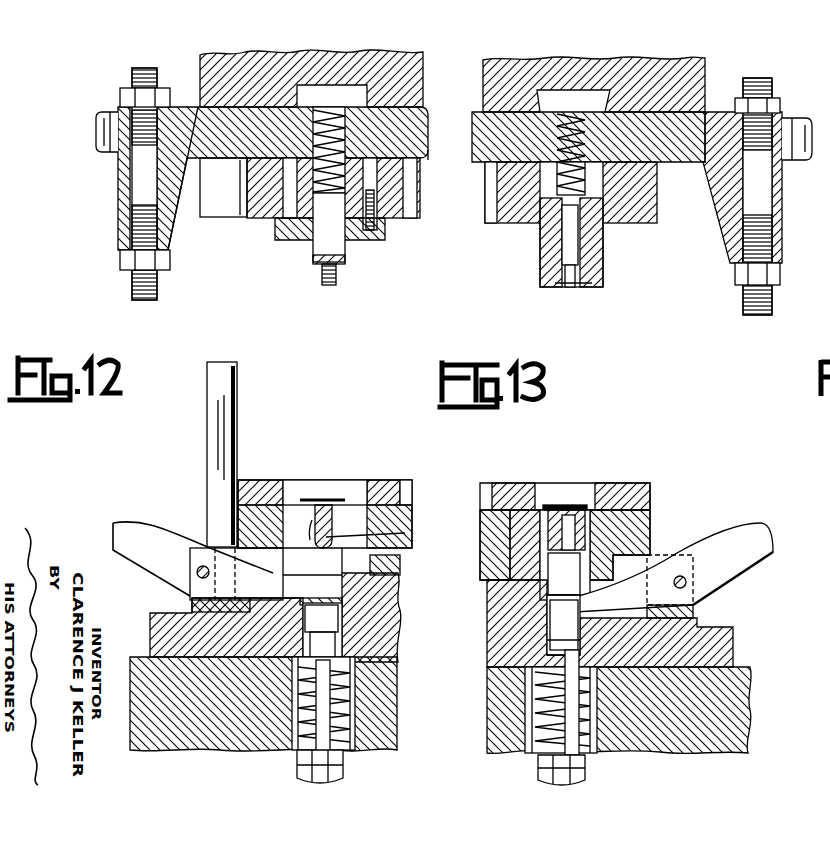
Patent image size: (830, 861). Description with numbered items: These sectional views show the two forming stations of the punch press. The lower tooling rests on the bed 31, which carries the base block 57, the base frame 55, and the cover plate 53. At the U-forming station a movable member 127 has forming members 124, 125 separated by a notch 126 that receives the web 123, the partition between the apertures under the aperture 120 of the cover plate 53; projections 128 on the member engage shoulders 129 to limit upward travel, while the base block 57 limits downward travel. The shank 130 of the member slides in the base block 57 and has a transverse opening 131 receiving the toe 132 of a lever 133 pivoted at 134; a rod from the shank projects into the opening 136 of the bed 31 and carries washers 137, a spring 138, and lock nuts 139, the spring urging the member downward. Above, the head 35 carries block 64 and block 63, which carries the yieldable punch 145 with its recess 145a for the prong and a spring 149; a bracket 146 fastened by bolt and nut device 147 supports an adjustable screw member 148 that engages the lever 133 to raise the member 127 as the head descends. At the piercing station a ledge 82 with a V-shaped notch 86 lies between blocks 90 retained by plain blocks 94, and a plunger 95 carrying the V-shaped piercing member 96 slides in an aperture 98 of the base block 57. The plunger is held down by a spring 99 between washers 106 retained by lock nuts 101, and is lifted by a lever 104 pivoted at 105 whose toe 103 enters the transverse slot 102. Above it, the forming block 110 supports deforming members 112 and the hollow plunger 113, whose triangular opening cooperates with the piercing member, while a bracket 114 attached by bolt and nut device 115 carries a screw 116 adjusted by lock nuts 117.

In FIG. 12, the bed 31 is at (390, 735).
In FIG. 13, the bed 31 is at (745, 690).
In FIG. 12, the vertical reciprocal head 35 is at (385, 56).
In FIG. 13, the vertical reciprocal head 35 is at (630, 70).
In FIG. 12, the cover plate 53 is at (385, 480).
In FIG. 13, the cover plate 53 is at (505, 495).
In FIG. 12, the base frame 55 is at (410, 535).
In FIG. 13, the base frame 55 is at (648, 522).
In FIG. 12, the base block 57 is at (150, 628).
In FIG. 13, the base block 57 is at (733, 640).
In FIG. 12, the block 63 is at (400, 210).
In FIG. 13, the block 63 is at (640, 208).
In FIG. 12, the block 64 is at (428, 118).
In FIG. 13, the block 64 is at (690, 162).
In FIG. 13, the ledged portion 82 is at (500, 548).
In FIG. 13, the V-shaped notch 86 is at (560, 506).
In FIG. 13, the blocks 90 is at (605, 510).
In FIG. 13, the plain blocks 94 is at (525, 565).
In FIG. 13, the plunger 95 is at (580, 560).
In FIG. 13, the V-shaped piercing member 96 is at (575, 515).
In FIG. 13, the aperture 98 is at (590, 625).
In FIG. 13, the spring 99 is at (525, 690).
In FIG. 13, the lock nuts 101 is at (587, 765).
In FIG. 13, the transverse slot 102 is at (548, 598).
In FIG. 13, the toe 103 is at (550, 640).
In FIG. 13, the lever 104 is at (726, 532).
In FIG. 13, the pivot 105 is at (688, 586).
In FIG. 13, the washers 106 is at (548, 656).
In FIG. 13, the forming block 110 is at (603, 270).
In FIG. 13, the deforming members 112 is at (540, 254).
In FIG. 13, the hollow plunger 113 is at (595, 284).
In FIG. 13, the bracket 114 is at (760, 225).
In FIG. 13, the bolt and nut device 115 is at (812, 126).
In FIG. 13, the screw 116 is at (775, 300).
In FIG. 13, the lock nuts 117 is at (773, 100).
In FIG. 12, the aperture 120 is at (324, 492).
In FIG. 12, the web 123 is at (322, 538).
In FIG. 12, the forming member 124 is at (283, 520).
In FIG. 12, the forming member 125 is at (350, 508).
In FIG. 12, the notch 126 is at (405, 536).
In FIG. 12, the movable member 127 is at (235, 535).
In FIG. 12, the projections 128 is at (400, 597).
In FIG. 12, the shoulders 129 is at (400, 560).
In FIG. 12, the shank 130 is at (345, 630).
In FIG. 12, the transverse opening 131 is at (352, 575).
In FIG. 12, the toe 132 is at (322, 584).
In FIG. 12, the lever 133 is at (127, 528).
In FIG. 12, the pivot 134 is at (197, 575).
In FIG. 12, the opening 136 is at (352, 726).
In FIG. 12, the washers 137 is at (355, 680).
In FIG. 12, the spring 138 is at (332, 703).
In FIG. 12, the lock nuts 139 is at (345, 765).
In FIG. 12, the yieldable punch 145 is at (336, 248).
In FIG. 12, the recess 145a is at (328, 285).
In FIG. 12, the bracket 146 is at (120, 176).
In FIG. 12, the bolt and nut device 147 is at (100, 118).
In FIG. 12, the adjustable screw member 148 is at (128, 200).
In FIG. 12, the spring 149 is at (428, 155).